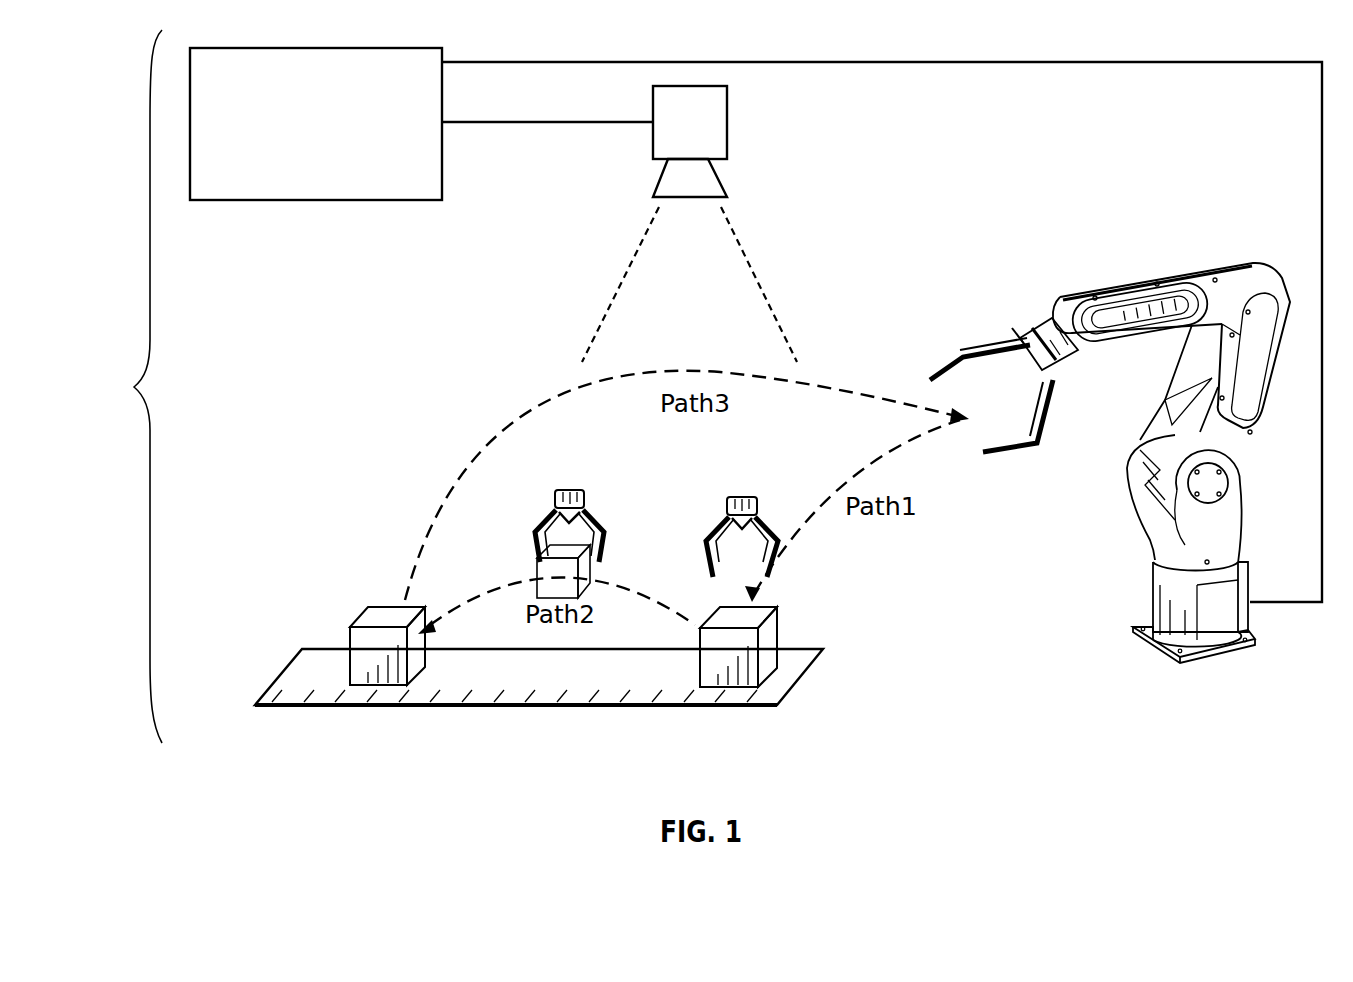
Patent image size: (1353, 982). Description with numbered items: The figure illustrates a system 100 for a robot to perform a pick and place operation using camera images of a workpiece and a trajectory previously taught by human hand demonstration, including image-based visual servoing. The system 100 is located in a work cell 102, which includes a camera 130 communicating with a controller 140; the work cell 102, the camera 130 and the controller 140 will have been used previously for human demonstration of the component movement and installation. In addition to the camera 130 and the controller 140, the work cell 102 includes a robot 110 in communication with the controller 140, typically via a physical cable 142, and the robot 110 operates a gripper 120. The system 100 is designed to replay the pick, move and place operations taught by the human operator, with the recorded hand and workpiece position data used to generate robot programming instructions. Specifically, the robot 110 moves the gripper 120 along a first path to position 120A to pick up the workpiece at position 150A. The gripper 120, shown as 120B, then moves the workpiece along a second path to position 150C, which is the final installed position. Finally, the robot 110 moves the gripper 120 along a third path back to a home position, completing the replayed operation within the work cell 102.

The system 100 is at (1092, 714).
The work cell 102 is at (121, 386).
The robot 110 is at (1238, 245).
The gripper 120 is at (1028, 480).
The position of gripper 120A is at (740, 495).
The gripper (moving position) 120B is at (570, 488).
The camera 130 is at (727, 125).
The controller 140 is at (315, 200).
The physical cable 142 is at (1067, 62).
The position of workpiece (pick position) 150A is at (767, 662).
The position of workpiece (final position) 150C is at (410, 662).